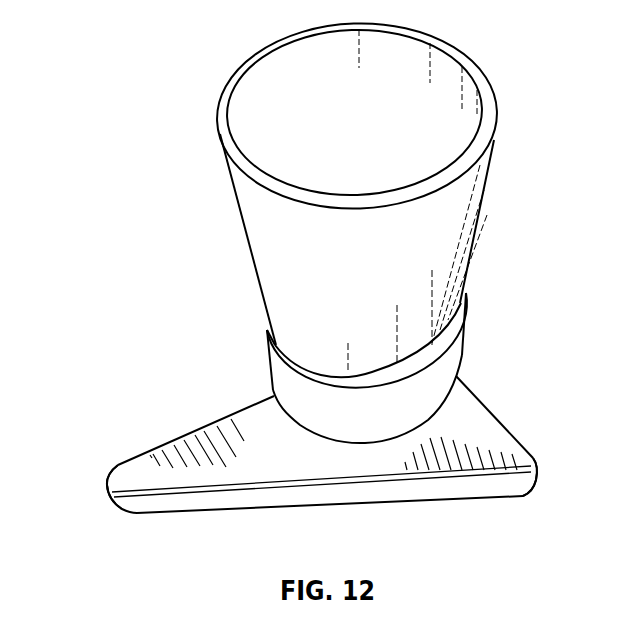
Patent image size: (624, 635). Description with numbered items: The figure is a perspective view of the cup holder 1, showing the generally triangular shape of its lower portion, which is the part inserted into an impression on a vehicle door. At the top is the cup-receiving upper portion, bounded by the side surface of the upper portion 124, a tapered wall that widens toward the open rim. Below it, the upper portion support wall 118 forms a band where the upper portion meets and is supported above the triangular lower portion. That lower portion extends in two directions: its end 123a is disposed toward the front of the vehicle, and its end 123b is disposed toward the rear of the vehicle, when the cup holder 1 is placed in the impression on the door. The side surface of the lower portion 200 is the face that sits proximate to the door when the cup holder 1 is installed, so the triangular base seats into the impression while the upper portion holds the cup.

The cup holder 1 is at (446, 44).
The side surface of upper portion 124 is at (263, 243).
The upper portion support wall 118 is at (290, 382).
The front end of lower portion 123a is at (111, 492).
The rear end of lower portion 123b is at (503, 423).
The side surface of lower portion disposed proximate to door 200 is at (356, 492).